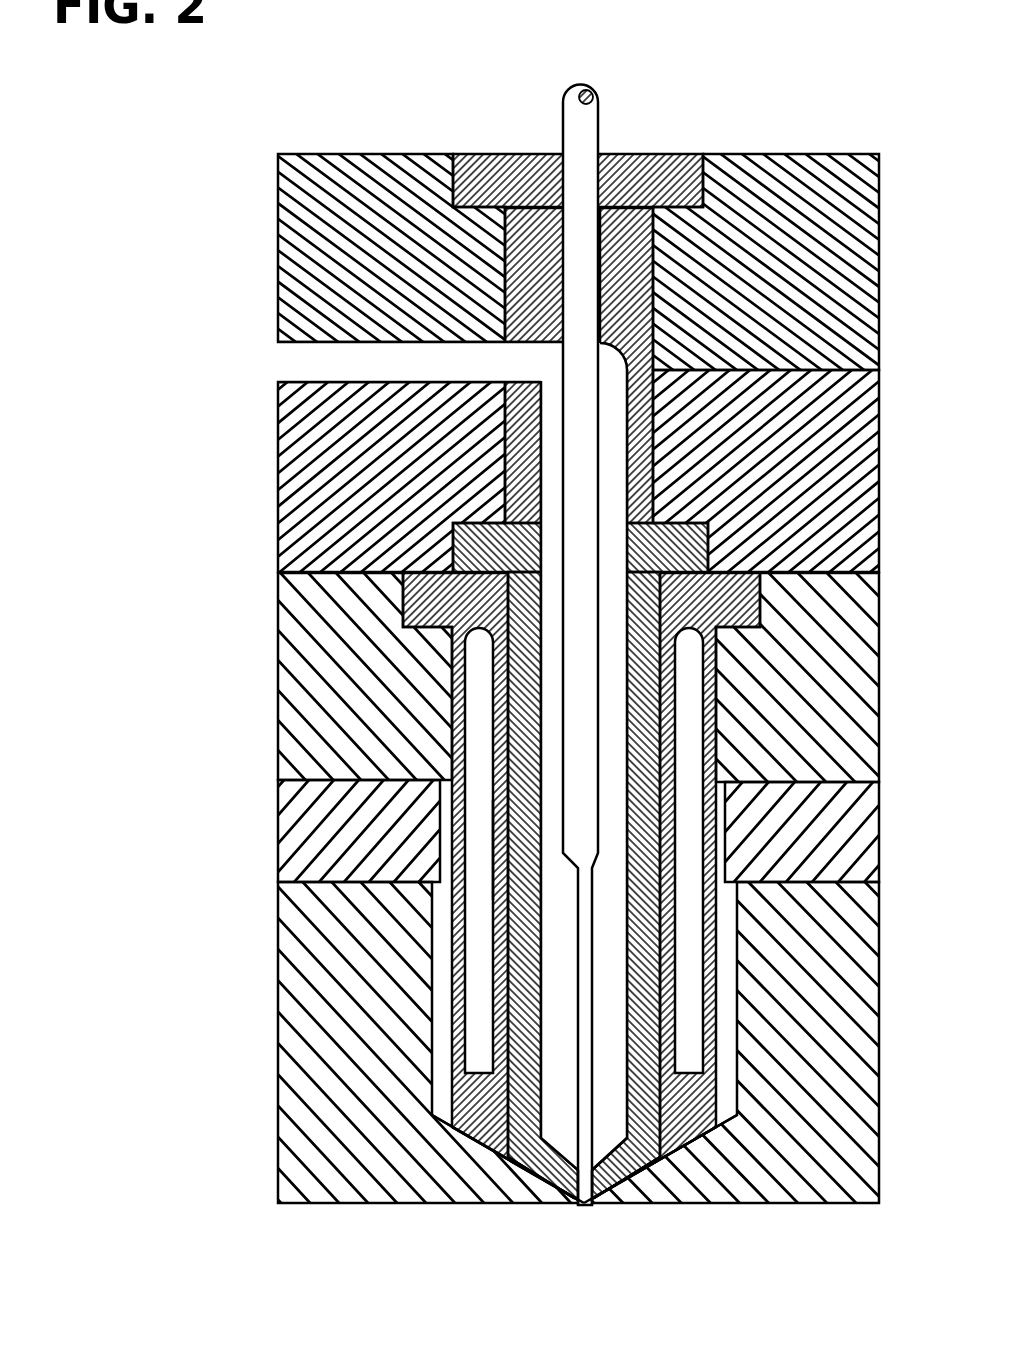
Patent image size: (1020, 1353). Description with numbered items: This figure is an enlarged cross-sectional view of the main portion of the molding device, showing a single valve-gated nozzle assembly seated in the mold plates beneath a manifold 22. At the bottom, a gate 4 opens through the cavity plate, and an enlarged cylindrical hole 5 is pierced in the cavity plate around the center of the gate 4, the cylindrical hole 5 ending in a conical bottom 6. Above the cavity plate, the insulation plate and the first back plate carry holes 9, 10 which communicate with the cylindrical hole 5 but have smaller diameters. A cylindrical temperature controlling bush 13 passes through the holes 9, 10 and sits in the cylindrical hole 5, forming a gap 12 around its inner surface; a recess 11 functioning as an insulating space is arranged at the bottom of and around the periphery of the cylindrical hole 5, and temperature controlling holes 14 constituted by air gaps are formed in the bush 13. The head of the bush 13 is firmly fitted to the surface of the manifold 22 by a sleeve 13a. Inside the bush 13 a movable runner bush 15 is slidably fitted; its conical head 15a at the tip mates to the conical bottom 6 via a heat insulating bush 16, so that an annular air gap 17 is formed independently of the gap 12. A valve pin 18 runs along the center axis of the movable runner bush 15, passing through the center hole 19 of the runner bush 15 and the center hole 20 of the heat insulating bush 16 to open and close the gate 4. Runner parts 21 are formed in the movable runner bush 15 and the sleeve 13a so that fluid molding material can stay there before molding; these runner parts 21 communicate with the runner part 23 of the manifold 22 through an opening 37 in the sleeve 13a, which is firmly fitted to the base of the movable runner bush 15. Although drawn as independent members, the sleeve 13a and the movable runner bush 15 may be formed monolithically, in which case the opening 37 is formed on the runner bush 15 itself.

The gates 4 is at (583, 1208).
The cylindrical holes 5 is at (737, 1110).
The conical bottoms 6 is at (540, 1167).
The hole 9 is at (468, 845).
The hole 10 is at (453, 707).
The recesses 11 is at (712, 1133).
The gaps 12 is at (442, 936).
The temperature controlling bushes 13 is at (713, 720).
The sleeves 13a is at (672, 205).
The temperature controlling holes 14 is at (480, 905).
The movable runner bushes 15 is at (650, 1160).
The conical heads 15a is at (560, 1187).
The heat insulating bushes 16 is at (573, 1197).
The annular air gaps 17 is at (650, 1167).
The valve pins 18 is at (598, 127).
The center holes 19 is at (610, 1143).
The center holes 20 is at (533, 1192).
The runner parts 21 is at (553, 613).
The manifold 22 is at (366, 415).
The runner part 23 is at (300, 358).
The openings 37 is at (528, 363).